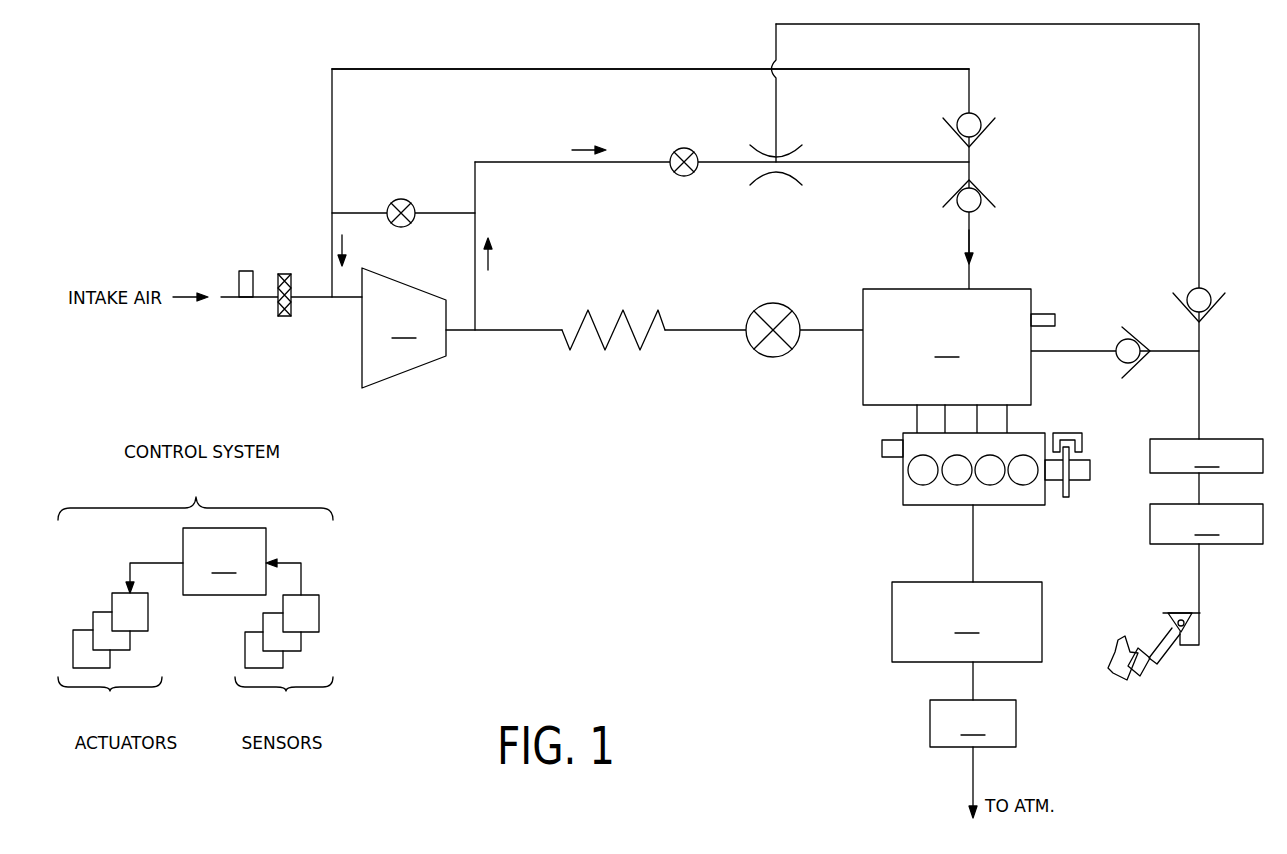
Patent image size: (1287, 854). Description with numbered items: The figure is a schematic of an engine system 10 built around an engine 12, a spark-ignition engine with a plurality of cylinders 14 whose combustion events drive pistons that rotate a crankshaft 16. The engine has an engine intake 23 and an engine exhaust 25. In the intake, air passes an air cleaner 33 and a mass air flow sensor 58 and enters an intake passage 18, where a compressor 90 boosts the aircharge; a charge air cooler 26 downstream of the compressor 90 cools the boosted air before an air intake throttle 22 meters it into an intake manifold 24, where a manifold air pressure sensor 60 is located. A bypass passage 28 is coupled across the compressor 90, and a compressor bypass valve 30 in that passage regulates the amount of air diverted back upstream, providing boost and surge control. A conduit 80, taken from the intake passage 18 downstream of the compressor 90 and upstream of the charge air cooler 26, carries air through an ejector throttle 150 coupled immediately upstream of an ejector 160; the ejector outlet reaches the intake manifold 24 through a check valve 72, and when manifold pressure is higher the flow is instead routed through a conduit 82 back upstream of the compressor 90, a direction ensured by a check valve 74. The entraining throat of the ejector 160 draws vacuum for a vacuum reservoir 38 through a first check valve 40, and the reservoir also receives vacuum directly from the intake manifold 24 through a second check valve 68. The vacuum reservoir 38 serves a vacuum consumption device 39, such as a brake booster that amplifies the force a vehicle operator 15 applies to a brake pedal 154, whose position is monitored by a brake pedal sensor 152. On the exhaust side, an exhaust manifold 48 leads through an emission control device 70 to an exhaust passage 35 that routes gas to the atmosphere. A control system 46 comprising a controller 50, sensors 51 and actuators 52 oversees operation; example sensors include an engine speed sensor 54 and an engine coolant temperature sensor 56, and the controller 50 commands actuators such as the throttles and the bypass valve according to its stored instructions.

The engine system 10 is at (175, 151).
The engine 12 is at (1022, 511).
The cylinders 14 is at (920, 485).
The vehicle operator 15 is at (1118, 674).
The crankshaft 16 is at (1076, 485).
The intake passage 18 is at (519, 320).
The air intake throttle 22 is at (770, 304).
The engine intake 23 is at (496, 447).
The intake manifold 24 is at (947, 347).
The engine exhaust 25 is at (836, 653).
The charge air cooler 26 is at (653, 316).
The bypass passage 28 is at (345, 213).
The compressor bypass valve 30 is at (400, 199).
The air cleaner 33 is at (284, 317).
The exhaust passage 35 is at (970, 760).
The vacuum reservoir 38 is at (1206, 456).
The vacuum consumption device 39 is at (1206, 524).
The first check valve 40 is at (1210, 292).
The control system 46 is at (195, 495).
The exhaust manifold 48 is at (967, 622).
The controller 50 is at (224, 561).
The sensors 51 is at (284, 659).
The actuators 52 is at (110, 656).
The engine speed sensor 54 is at (1064, 432).
The engine coolant temperature sensor 56 is at (882, 449).
The mass air flow sensor 58 is at (246, 271).
The manifold air pressure sensor 60 is at (1056, 321).
The second check valve 68 is at (1133, 328).
The emission control device 70 is at (973, 723).
The check valve 72 is at (993, 207).
The check valve 74 is at (946, 120).
The conduit 80 is at (520, 165).
The conduit 82 is at (490, 69).
The compressor 90 is at (404, 328).
The ejector throttle 150 is at (684, 148).
The brake pedal sensor 152 is at (1170, 622).
The brake pedal 154 is at (1160, 680).
The ejector 160 is at (800, 150).